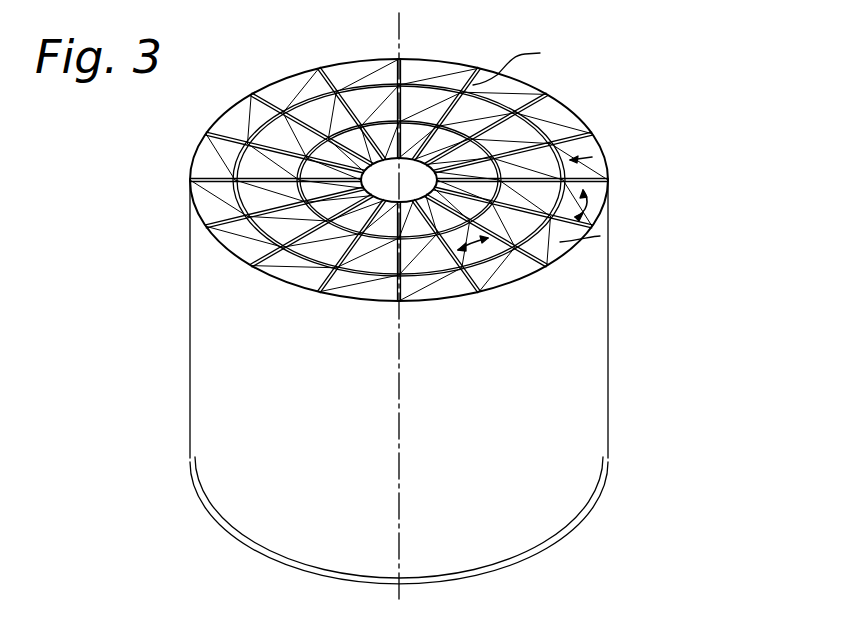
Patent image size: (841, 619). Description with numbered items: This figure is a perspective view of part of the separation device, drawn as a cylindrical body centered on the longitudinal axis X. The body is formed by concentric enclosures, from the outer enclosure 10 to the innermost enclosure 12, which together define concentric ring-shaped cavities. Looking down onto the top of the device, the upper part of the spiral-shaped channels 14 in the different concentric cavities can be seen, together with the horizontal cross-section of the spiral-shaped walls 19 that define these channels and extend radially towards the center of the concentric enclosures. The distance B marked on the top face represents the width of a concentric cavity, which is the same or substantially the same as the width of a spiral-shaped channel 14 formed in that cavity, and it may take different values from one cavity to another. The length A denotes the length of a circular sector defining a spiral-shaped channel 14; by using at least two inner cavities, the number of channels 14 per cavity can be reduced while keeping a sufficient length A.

The enclosure 10 is at (617, 316).
The innermost enclosure 12 is at (520, 109).
The spiral-shaped channels 14 is at (252, 137).
The spiral-shaped walls 19 is at (520, 64).
The longitudinal axis X is at (399, 28).
The length of a circular sector A is at (592, 212).
The distance B is at (570, 160).